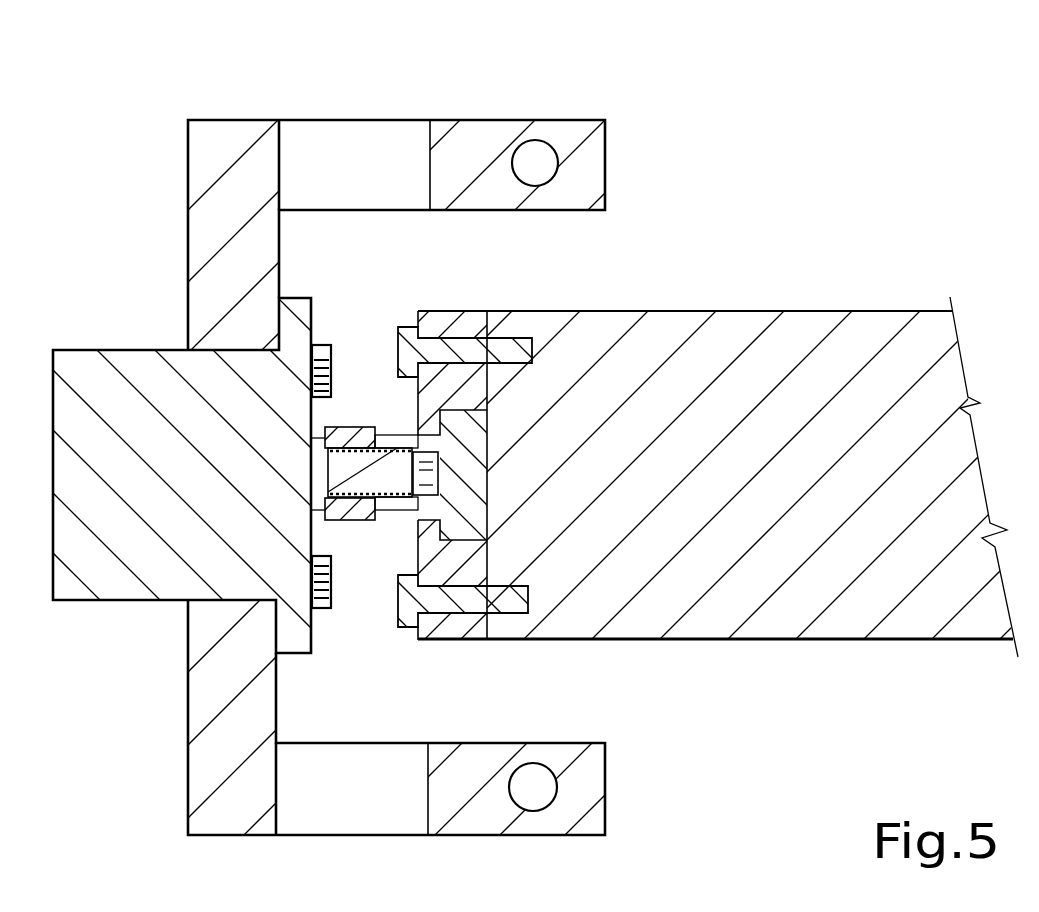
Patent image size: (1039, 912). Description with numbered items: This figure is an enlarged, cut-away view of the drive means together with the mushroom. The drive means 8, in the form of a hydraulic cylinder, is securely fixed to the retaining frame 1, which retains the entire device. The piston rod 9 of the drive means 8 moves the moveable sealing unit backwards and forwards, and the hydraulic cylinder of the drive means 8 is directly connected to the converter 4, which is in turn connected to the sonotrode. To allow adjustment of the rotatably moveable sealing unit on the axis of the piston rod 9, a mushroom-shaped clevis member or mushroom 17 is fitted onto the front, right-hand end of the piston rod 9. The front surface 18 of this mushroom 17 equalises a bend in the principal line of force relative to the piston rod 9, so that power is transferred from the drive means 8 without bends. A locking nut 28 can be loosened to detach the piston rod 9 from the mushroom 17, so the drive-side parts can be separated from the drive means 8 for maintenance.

The retaining frame 1 is at (218, 157).
The converter 4 is at (743, 350).
The drive means 8 is at (127, 530).
The piston rod 9 is at (368, 427).
The mushroom-shaped clevis member 17 is at (497, 405).
The front surface 18 is at (486, 445).
The locking nut 28 is at (352, 520).